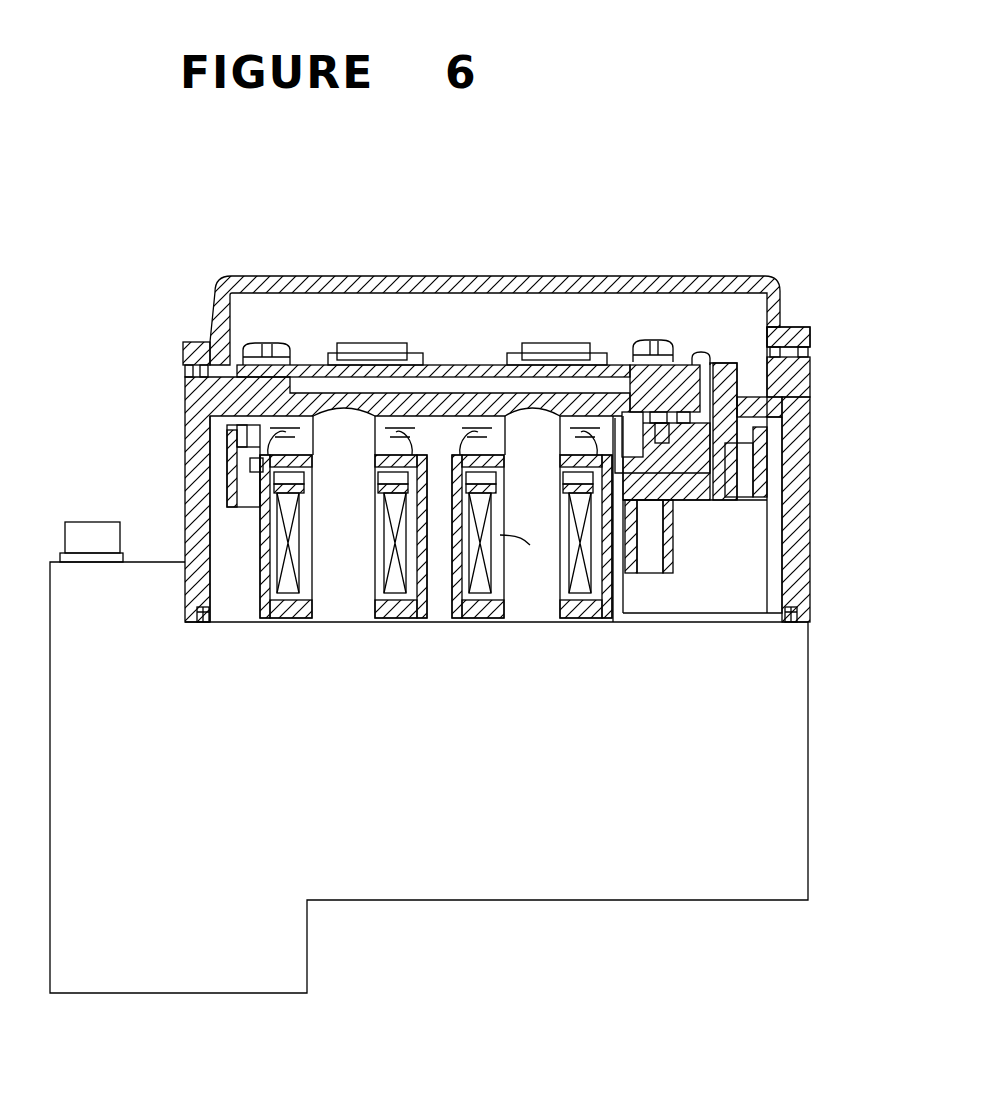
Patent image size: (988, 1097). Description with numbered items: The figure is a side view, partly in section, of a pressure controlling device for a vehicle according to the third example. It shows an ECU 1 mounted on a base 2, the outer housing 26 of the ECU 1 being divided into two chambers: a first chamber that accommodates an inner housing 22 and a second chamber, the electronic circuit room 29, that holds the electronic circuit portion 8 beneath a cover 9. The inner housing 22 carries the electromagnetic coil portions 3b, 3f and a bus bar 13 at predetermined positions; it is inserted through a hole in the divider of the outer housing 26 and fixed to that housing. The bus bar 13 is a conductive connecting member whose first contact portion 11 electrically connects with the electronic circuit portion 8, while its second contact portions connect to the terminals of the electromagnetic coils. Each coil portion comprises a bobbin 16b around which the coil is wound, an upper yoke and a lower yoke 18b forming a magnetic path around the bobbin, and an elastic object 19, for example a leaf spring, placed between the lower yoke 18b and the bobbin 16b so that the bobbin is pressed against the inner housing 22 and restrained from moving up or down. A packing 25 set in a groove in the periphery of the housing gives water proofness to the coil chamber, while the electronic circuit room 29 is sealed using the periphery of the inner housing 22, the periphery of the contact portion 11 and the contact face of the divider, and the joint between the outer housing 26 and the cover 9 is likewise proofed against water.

The ECU 1 is at (532, 474).
The base 2 is at (808, 778).
The electronic circuit portion 8 is at (473, 365).
The cover 9 is at (745, 276).
The first contact portion 11 is at (727, 358).
The bus bar 13 is at (688, 485).
The elastic object 19 is at (410, 605).
The inner housing 22 is at (258, 500).
The packing 25 is at (793, 605).
The outer housing 26 is at (795, 447).
The electronic circuit room 29 is at (550, 327).
The electromagnetic coil portion 3b is at (302, 618).
The electromagnetic coil portion 3f is at (480, 605).
The bobbin 16b is at (275, 605).
The lower yoke 18b is at (380, 605).